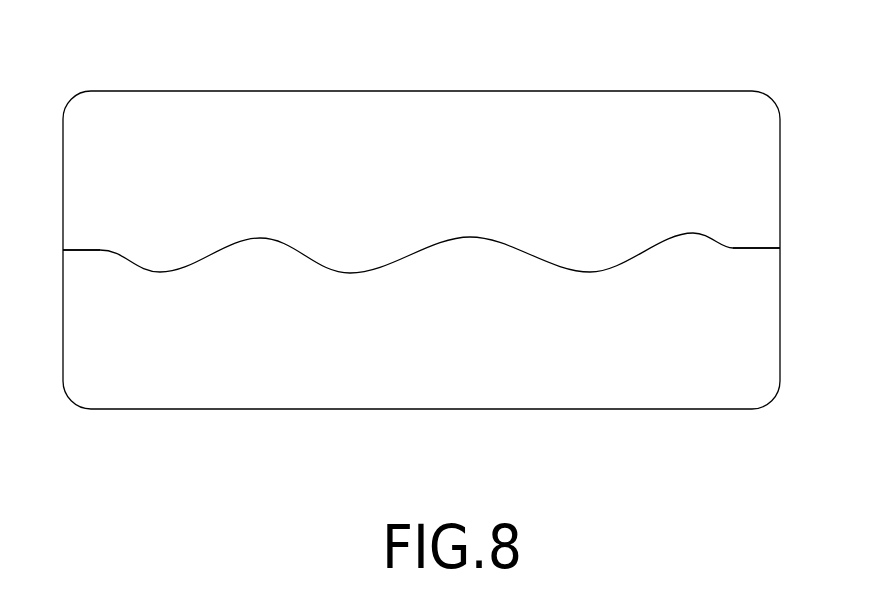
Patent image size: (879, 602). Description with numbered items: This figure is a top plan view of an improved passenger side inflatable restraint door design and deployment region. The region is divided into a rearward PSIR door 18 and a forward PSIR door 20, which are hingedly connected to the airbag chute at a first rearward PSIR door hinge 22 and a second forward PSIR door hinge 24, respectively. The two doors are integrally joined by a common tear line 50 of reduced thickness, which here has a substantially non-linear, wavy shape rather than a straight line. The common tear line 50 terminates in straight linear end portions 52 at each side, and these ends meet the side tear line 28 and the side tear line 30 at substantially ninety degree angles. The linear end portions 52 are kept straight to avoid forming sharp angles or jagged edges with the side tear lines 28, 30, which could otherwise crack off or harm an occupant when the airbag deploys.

The rearward PSIR door 18 is at (225, 368).
The forward PSIR door 20 is at (283, 126).
The first rearward PSIR door hinge 22 is at (542, 408).
The second forward PSIR door hinge 24 is at (642, 91).
The side tear line 28 is at (63, 190).
The side tear line 30 is at (780, 190).
The common tear line 50 is at (350, 272).
The linear end portions 52 is at (85, 252).